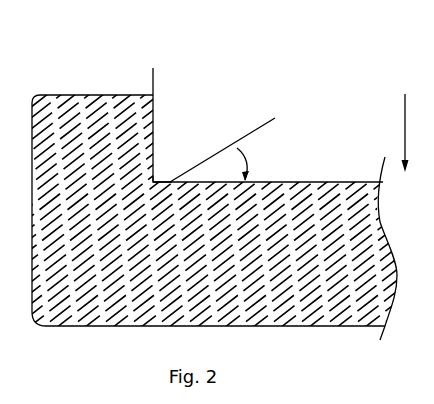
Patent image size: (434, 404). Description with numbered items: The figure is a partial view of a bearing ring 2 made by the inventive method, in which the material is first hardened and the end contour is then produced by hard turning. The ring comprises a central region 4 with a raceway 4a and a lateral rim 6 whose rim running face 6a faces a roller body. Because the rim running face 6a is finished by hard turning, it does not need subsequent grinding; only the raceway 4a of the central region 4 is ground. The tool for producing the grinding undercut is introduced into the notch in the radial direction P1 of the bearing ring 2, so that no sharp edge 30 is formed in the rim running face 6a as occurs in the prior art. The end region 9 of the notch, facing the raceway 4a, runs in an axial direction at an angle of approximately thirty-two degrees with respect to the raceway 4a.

The bearing ring 2 is at (228, 108).
The central region 4 is at (290, 182).
The raceway 4a is at (336, 181).
The lateral rim 6 is at (97, 98).
The rim running face 6a is at (156, 182).
The end region of the notch 9 is at (170, 182).
The edge 30 is at (163, 182).
The radial direction P1 is at (401, 123).